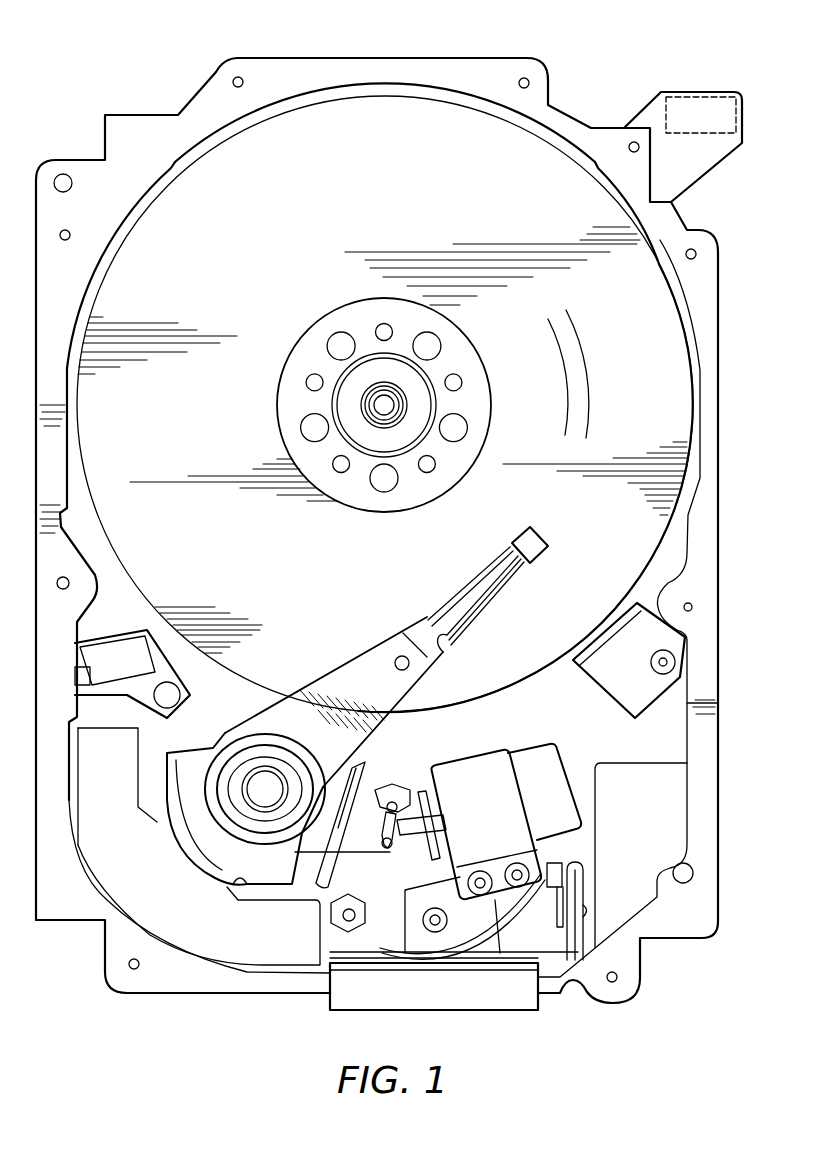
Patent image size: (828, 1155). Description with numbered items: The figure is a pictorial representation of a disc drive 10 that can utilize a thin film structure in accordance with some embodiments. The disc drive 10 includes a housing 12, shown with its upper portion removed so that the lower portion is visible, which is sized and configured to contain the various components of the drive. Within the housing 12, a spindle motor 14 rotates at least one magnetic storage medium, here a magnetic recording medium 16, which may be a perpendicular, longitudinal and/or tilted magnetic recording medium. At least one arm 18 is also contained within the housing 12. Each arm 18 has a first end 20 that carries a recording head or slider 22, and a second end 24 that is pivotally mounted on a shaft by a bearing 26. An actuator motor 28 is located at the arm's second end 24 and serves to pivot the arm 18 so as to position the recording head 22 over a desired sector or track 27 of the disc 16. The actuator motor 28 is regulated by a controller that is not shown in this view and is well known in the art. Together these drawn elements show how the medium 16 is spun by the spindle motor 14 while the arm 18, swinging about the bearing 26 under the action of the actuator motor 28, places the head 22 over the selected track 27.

The disc drive 10 is at (88, 103).
The housing 12 is at (505, 70).
The spindle motor 14 is at (378, 407).
The magnetic recording medium 16 is at (304, 215).
The arm 18 is at (370, 677).
The first end 20 is at (475, 572).
The recording head 22 is at (527, 543).
The second end 24 is at (288, 727).
The bearing 26 is at (257, 775).
The track 27 is at (575, 384).
The actuator motor 28 is at (143, 893).